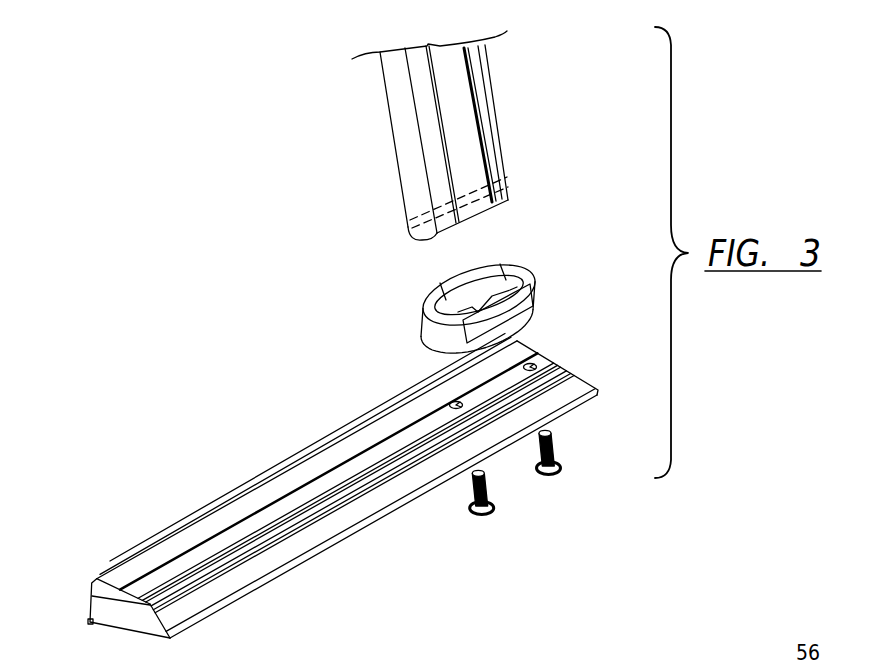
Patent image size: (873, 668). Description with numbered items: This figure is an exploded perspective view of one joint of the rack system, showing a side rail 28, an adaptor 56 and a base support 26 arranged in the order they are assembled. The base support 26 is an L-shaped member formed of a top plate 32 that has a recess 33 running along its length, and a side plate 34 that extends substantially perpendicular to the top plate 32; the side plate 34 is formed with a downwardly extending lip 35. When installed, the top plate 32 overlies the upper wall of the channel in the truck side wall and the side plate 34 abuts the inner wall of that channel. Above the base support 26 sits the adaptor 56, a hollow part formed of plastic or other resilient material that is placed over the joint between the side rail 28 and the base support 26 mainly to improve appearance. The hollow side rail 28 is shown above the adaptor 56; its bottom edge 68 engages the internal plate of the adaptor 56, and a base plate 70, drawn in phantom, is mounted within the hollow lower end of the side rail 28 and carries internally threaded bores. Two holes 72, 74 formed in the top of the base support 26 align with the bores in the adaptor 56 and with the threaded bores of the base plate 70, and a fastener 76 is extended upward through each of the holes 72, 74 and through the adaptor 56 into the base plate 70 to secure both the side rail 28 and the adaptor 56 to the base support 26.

The base support 26 is at (316, 499).
The side rail 28 is at (497, 113).
The top plate 32 is at (180, 617).
The recess 33 is at (125, 556).
The side plate 34 is at (87, 617).
The lip 35 is at (92, 627).
The adaptor 56 is at (543, 281).
The bottom edge 68 is at (420, 241).
The base plate 70 is at (407, 221).
The hole 72 is at (452, 403).
The hole 74 is at (533, 363).
The fastener 76 is at (548, 477).